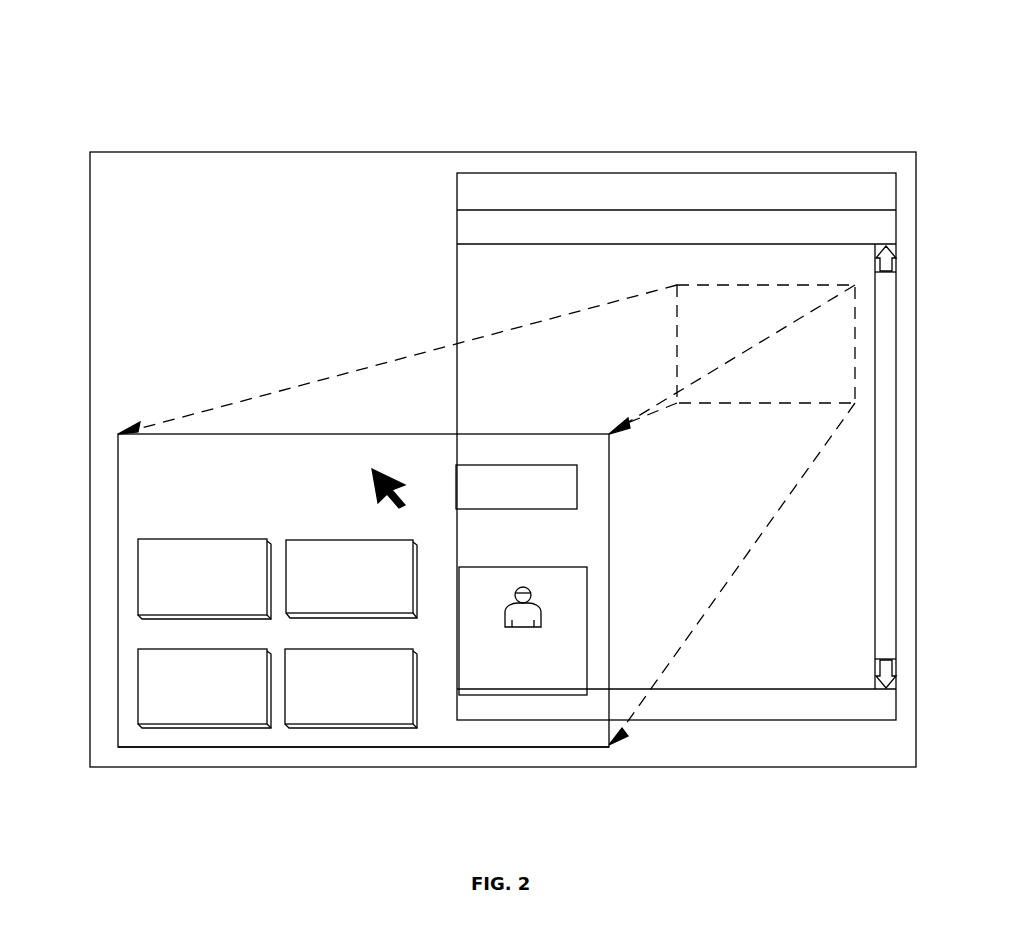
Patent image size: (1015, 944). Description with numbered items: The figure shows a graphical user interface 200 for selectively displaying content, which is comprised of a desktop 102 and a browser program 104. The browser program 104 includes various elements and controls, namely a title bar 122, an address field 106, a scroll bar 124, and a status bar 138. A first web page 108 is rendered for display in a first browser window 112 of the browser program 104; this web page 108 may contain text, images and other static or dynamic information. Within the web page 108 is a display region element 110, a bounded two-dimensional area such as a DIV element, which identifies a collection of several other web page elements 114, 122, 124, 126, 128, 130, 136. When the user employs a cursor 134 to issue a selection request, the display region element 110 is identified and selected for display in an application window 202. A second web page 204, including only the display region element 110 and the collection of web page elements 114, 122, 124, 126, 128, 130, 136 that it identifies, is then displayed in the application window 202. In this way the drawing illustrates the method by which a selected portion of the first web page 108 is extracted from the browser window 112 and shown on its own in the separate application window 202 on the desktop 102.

The graphical user interface 200 is at (847, 83).
The desktop 102 is at (207, 152).
The browser program 104 is at (535, 172).
The title bar 122 is at (718, 197).
The address field 106 is at (815, 228).
The browser window 112 is at (457, 281).
The display region element 110 is at (855, 345).
The scroll bar 124 is at (885, 467).
The web page 108 is at (770, 644).
The application window 202 is at (609, 591).
The second web page 204 is at (458, 724).
The web page element 136 is at (150, 489).
The cursor 134 is at (398, 480).
The web page element 126 is at (313, 539).
The web page element 128 is at (577, 484).
The web page element 130 is at (320, 726).
The web page element 114 is at (518, 694).
The status bar 138 is at (813, 698).